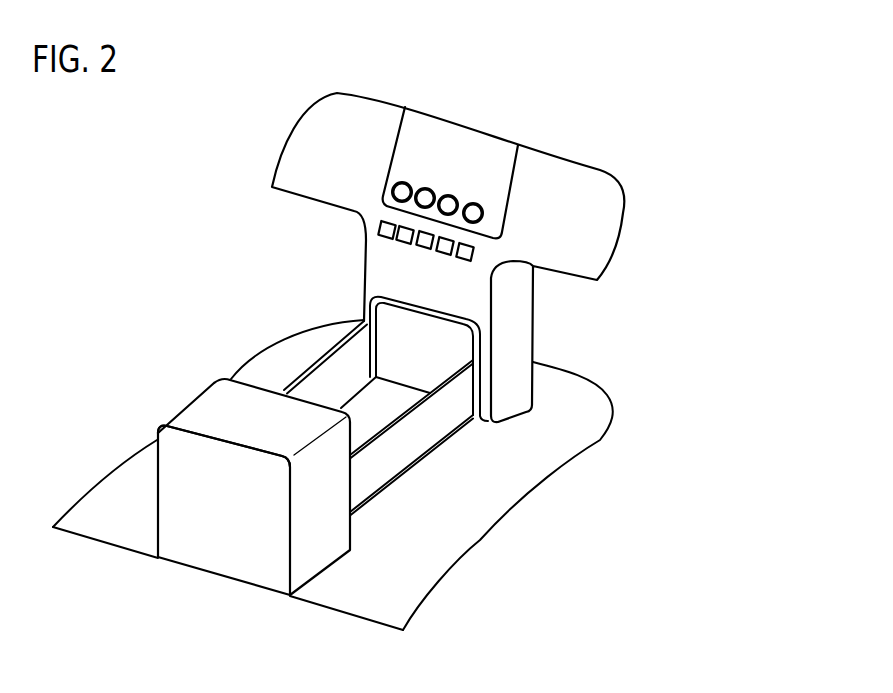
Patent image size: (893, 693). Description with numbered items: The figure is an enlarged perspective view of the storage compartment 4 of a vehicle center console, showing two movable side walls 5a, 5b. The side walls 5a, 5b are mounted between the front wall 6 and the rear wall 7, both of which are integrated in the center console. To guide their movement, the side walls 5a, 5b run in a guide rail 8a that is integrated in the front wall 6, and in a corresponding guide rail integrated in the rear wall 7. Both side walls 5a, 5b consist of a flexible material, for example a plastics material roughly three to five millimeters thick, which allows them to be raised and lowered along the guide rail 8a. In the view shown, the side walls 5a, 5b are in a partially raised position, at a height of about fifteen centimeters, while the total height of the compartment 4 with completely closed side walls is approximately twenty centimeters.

The storage compartment 4 is at (373, 413).
The movable side wall 5a is at (372, 477).
The movable side wall 5b is at (330, 380).
The front wall 6 is at (452, 347).
The rear wall 7 is at (257, 387).
The guide rail 8a is at (378, 295).